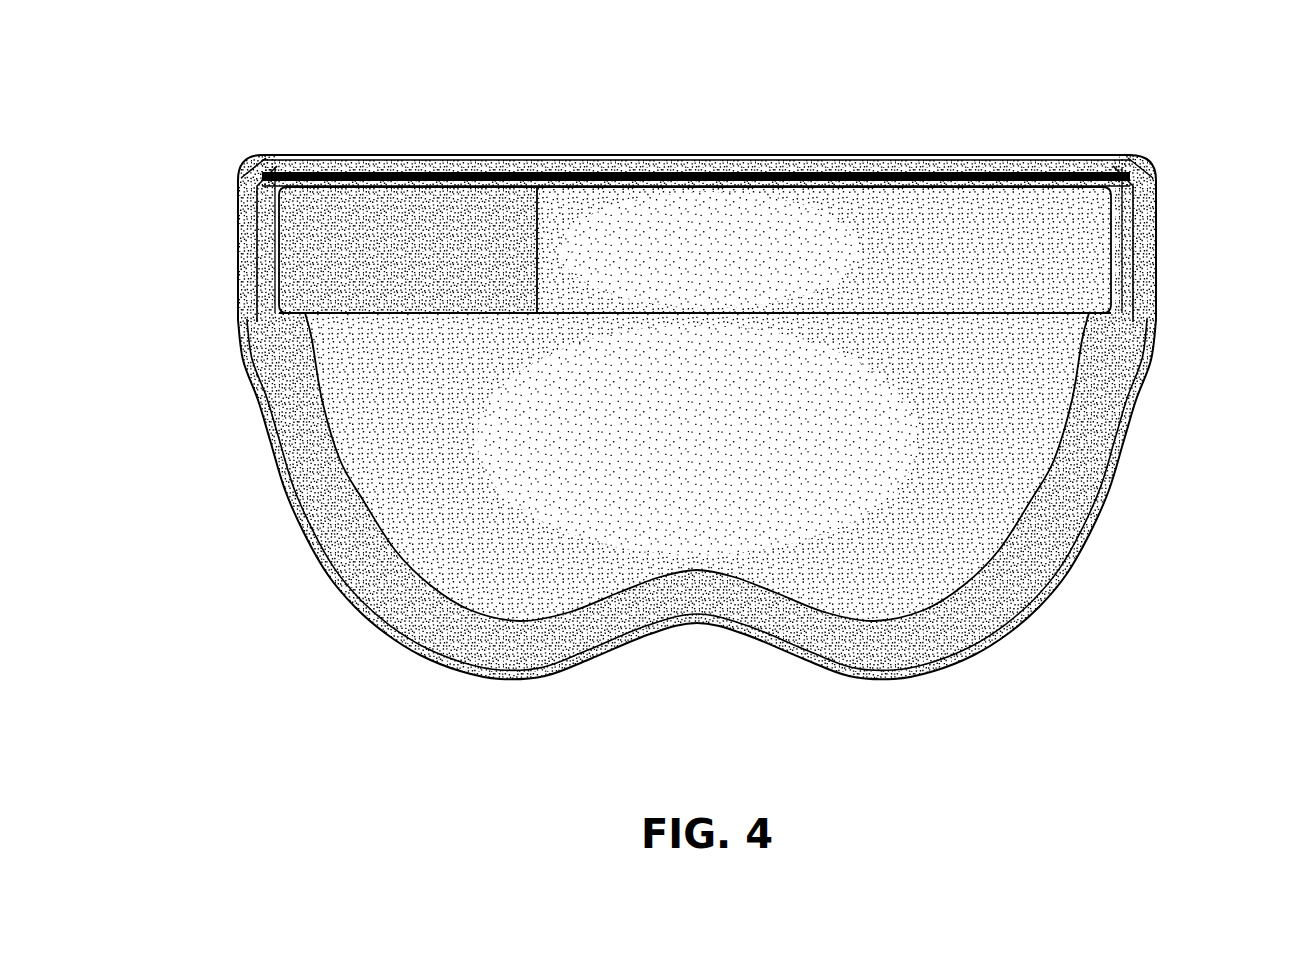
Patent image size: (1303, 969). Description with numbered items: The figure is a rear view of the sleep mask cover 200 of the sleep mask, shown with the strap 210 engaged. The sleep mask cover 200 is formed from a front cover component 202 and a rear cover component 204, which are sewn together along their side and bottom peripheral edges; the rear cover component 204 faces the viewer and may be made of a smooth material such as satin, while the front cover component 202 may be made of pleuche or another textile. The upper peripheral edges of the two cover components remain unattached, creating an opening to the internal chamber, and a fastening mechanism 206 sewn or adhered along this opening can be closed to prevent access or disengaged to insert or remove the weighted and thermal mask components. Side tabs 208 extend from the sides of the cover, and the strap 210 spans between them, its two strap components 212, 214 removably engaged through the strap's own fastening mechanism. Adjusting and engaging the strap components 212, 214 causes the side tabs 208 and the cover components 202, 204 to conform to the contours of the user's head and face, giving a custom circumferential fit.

The sleep mask cover 200 is at (701, 360).
The front cover component 202 is at (285, 510).
The rear cover component 204 is at (678, 432).
The fastening mechanism 206 is at (668, 172).
The side tabs 208 is at (238, 246).
The strap 210 is at (595, 313).
The strap component 212 is at (886, 265).
The strap component 214 is at (379, 265).